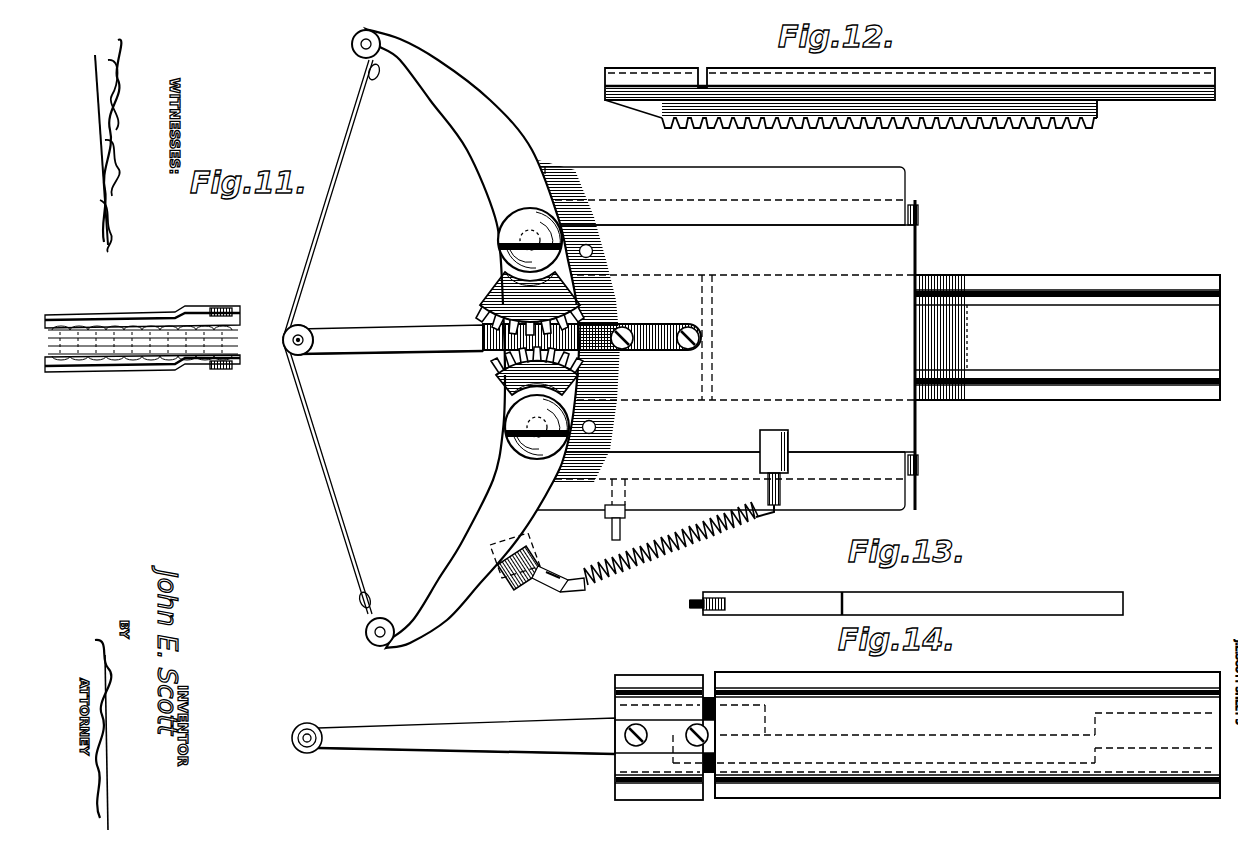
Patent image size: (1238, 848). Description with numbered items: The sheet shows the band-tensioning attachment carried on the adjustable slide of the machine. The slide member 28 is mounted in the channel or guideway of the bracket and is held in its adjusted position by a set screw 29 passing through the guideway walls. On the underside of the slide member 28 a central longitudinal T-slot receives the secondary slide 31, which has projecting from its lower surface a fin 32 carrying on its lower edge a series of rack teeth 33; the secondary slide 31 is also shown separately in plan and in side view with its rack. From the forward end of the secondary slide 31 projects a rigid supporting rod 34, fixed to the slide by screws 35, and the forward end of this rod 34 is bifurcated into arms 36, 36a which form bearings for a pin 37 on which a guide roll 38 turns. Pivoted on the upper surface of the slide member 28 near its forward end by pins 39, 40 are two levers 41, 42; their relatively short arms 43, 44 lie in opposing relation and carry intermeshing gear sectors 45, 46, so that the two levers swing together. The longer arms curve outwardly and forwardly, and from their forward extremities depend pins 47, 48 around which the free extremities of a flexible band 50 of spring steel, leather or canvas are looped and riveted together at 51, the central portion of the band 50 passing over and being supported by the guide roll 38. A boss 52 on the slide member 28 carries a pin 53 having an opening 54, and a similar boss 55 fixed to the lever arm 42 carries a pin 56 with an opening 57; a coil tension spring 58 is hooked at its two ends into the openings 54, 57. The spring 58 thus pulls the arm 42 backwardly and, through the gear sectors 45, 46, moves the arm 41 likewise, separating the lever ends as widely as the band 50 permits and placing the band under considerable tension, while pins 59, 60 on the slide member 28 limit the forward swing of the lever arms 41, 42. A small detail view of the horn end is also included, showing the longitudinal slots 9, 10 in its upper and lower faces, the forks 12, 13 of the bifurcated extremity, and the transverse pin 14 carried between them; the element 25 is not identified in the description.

In FIG. 11, the slot 9 is at (70, 328).
In FIG. 11, the slot 10 is at (96, 366).
In FIG. 11, the fork 12 is at (188, 315).
In FIG. 11, the fork 13 is at (196, 366).
In FIG. 11, the pin 14 is at (228, 311).
In FIG. 11, the chain links 25 is at (106, 330).
In FIG. 11, the slide member 28 is at (720, 338).
In FIG. 11, the set screw 29 is at (610, 522).
In FIG. 11, the secondary slide 31 is at (1067, 337).
In FIG. 12, the secondary slide 31 is at (910, 70).
In FIG. 14, the secondary slide 31 is at (917, 736).
In FIG. 12, the fin 32 is at (1098, 108).
In FIG. 12, the rack teeth 33 is at (1027, 124).
In FIG. 11, the supporting rod 34 is at (390, 339).
In FIG. 13, the supporting rod 34 is at (945, 586).
In FIG. 14, the supporting rod 34 is at (516, 736).
In FIG. 11, the screws 35 is at (680, 328).
In FIG. 14, the screws 35 is at (688, 737).
In FIG. 13, the arm 36 is at (720, 612).
In FIG. 13, the arm 36a is at (728, 596).
In FIG. 11, the pin 37 is at (304, 335).
In FIG. 14, the pin 37 is at (305, 748).
In FIG. 11, the guide roll 38 is at (305, 356).
In FIG. 13, the guide roll 38 is at (698, 606).
In FIG. 14, the guide roll 38 is at (308, 728).
In FIG. 11, the pin 39 is at (500, 240).
In FIG. 11, the pin 40 is at (506, 430).
In FIG. 11, the lever 41 is at (470, 136).
In FIG. 11, the lever 42 is at (490, 503).
In FIG. 11, the short arm 43 is at (503, 290).
In FIG. 11, the short arm 44 is at (516, 388).
In FIG. 11, the gear sector 45 is at (478, 307).
In FIG. 11, the gear sector 46 is at (494, 372).
In FIG. 11, the pin 47 is at (352, 46).
In FIG. 11, the pin 48 is at (366, 634).
In FIG. 11, the band 50 is at (322, 222).
In FIG. 11, the rivet 51 is at (353, 74).
In FIG. 11, the boss 52 is at (790, 445).
In FIG. 11, the pin 53 is at (766, 490).
In FIG. 11, the opening 54 is at (775, 510).
In FIG. 11, the boss 55 is at (524, 584).
In FIG. 11, the pin 56 is at (575, 553).
In FIG. 11, the opening 57 is at (562, 584).
In FIG. 11, the coil tension spring 58 is at (672, 546).
In FIG. 11, the pin 59 is at (594, 252).
In FIG. 11, the pin 60 is at (597, 428).